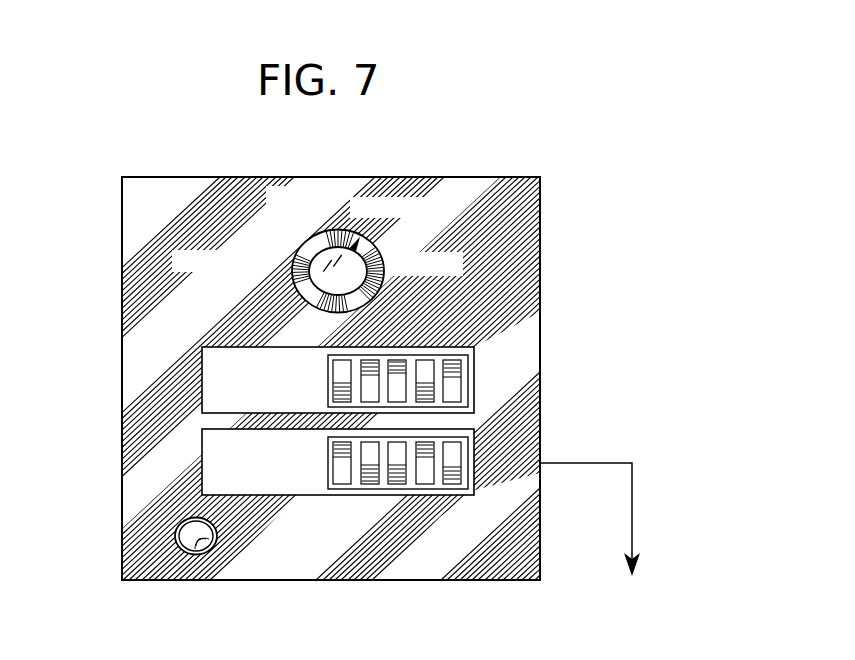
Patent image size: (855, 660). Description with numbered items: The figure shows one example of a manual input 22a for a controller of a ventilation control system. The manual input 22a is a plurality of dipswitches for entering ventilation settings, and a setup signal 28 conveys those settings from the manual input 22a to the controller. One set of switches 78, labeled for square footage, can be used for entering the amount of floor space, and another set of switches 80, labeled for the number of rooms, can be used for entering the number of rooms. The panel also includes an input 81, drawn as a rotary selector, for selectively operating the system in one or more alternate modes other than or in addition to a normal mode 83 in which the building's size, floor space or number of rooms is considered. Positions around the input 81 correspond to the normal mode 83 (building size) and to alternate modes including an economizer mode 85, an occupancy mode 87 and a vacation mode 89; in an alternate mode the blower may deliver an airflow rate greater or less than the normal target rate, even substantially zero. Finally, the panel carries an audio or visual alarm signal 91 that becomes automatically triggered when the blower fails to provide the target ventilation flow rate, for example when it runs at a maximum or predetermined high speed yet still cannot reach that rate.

The manual input 22a is at (76, 322).
The input 81 is at (377, 297).
The normal mode 83 is at (310, 225).
The economizer mode 85 is at (285, 257).
The occupancy mode 87 is at (362, 226).
The vacation mode 89 is at (390, 255).
The set of switches 78 is at (470, 381).
The set of switches 80 is at (378, 496).
The alarm signal 91 is at (183, 522).
The setup signal 28 is at (632, 495).